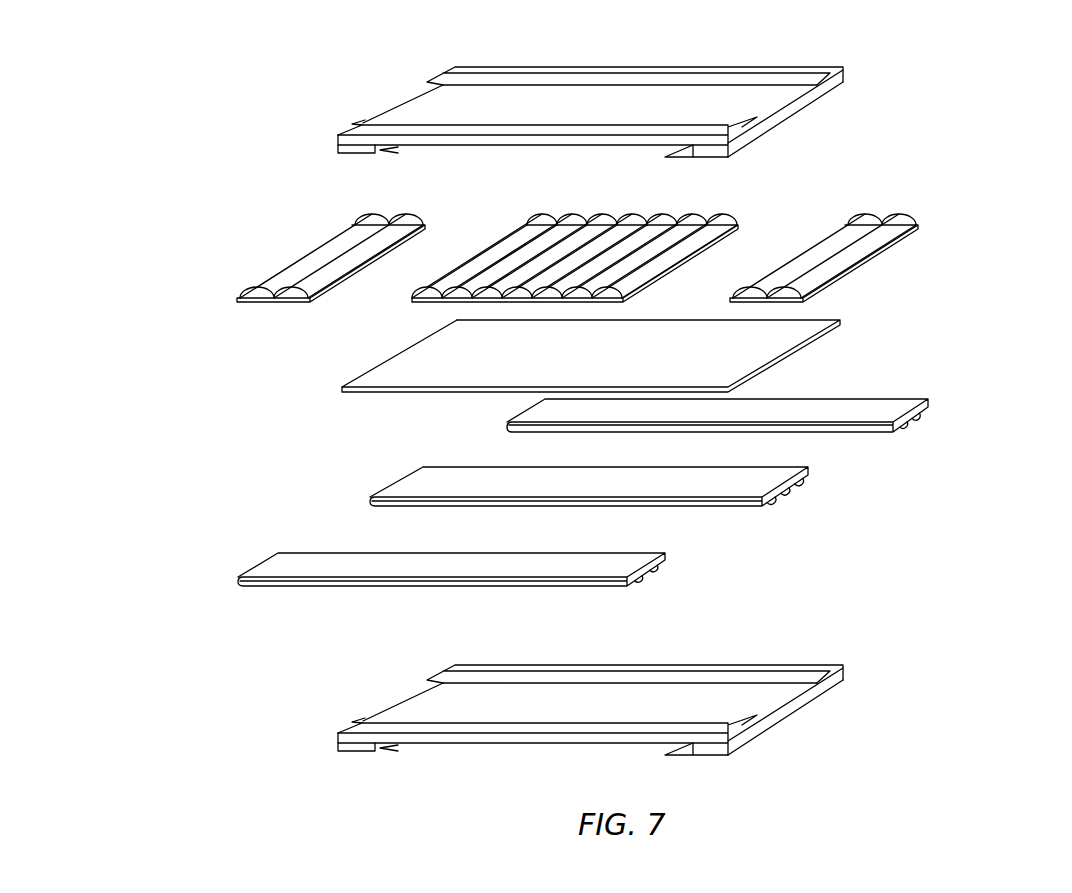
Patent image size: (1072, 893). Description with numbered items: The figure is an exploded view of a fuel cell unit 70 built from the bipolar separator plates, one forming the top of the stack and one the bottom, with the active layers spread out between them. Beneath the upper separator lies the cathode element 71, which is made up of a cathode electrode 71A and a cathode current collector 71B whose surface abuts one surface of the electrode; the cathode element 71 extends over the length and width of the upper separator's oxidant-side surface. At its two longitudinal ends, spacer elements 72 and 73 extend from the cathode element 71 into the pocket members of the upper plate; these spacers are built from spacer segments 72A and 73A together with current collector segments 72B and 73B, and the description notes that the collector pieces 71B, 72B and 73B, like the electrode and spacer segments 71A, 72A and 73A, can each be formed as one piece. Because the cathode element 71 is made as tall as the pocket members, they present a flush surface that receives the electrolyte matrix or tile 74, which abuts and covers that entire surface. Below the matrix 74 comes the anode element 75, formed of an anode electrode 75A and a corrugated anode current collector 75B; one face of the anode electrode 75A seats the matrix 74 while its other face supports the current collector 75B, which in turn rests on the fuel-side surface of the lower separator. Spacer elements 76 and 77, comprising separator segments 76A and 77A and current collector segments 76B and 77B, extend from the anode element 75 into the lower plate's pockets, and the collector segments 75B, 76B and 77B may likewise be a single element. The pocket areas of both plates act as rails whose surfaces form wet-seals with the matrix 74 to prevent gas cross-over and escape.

The fuel cell unit 70 is at (604, 362).
The cathode element 71 is at (556, 264).
The cathode electrode 71A is at (735, 243).
The cathode current collector 71B is at (625, 230).
The spacer element 72 is at (279, 250).
The spacer segment 72A is at (237, 297).
The current collector segment 72B is at (345, 244).
The spacer element 73 is at (870, 226).
The spacer segment 73A is at (905, 229).
The current collector segment 73B is at (857, 246).
The electrolyte matrix 74 is at (335, 385).
The anode element 75 is at (675, 485).
The anode electrode 75A is at (745, 480).
The anode current collector 75B is at (825, 480).
The spacer element 76 is at (446, 543).
The separator segment 76A is at (612, 565).
The current collector segment 76B is at (652, 565).
The spacer element 77 is at (784, 414).
The separator segment 77A is at (900, 408).
The current collector segment 77B is at (912, 427).